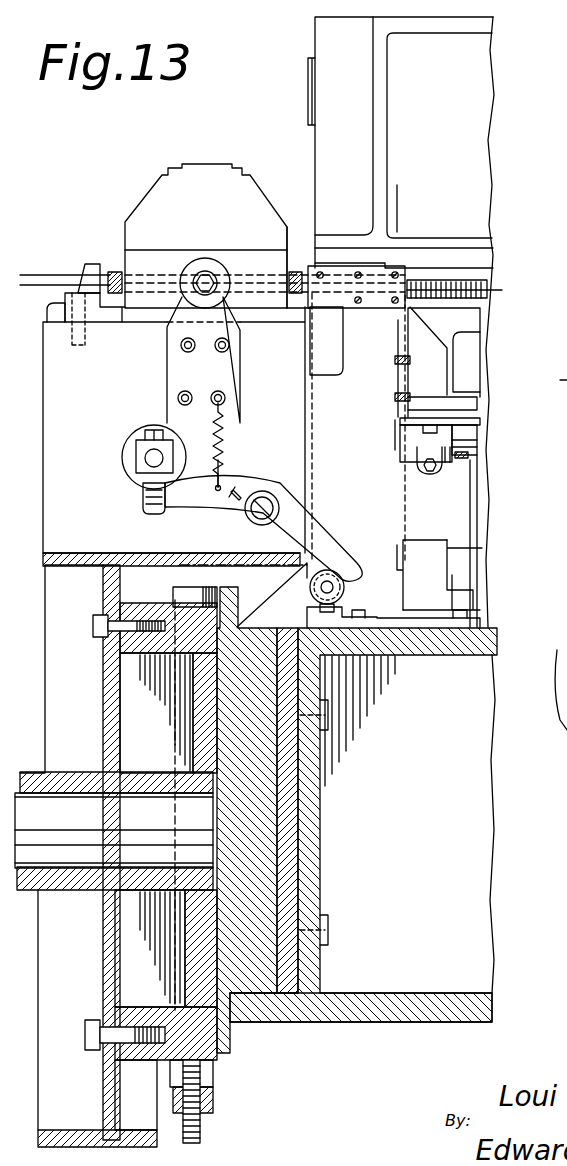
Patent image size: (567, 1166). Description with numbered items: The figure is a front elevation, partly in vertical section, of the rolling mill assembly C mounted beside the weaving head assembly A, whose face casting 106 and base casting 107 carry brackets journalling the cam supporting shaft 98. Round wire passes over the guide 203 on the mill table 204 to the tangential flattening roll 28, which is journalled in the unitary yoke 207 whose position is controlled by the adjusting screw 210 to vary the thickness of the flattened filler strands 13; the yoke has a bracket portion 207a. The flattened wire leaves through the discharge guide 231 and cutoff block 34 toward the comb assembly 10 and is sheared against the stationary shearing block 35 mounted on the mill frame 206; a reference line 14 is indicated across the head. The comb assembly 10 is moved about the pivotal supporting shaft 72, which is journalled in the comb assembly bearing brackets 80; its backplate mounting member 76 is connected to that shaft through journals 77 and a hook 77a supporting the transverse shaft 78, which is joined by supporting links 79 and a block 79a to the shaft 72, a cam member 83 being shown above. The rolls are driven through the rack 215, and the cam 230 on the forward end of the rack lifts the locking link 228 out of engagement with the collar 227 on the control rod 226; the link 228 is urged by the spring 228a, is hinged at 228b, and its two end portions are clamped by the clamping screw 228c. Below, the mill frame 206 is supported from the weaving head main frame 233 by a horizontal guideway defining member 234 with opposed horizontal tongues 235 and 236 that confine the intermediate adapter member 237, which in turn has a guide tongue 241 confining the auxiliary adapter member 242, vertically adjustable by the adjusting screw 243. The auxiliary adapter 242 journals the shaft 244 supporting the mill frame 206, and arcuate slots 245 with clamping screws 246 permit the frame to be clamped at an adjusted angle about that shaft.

The weaving head assembly A is at (503, 136).
The filler wire forming and injecting assembly C is at (137, 163).
The comb assembly 10 is at (465, 309).
The filler strands 13 is at (502, 290).
The reference plane 14 is at (388, 196).
The tangential flattening roll 28 is at (115, 271).
The knife 34 is at (408, 310).
The stationary shearing block 35 is at (405, 267).
The pivotal supporting shaft 72 is at (402, 556).
The backplate mounting member 76 is at (472, 404).
The journals 77 is at (447, 464).
The latch hook 77a is at (426, 475).
The transverse shaft 78 is at (403, 460).
The supporting links 79 is at (477, 513).
The bar block 79a is at (470, 456).
The comb assembly bearing brackets 80 is at (445, 552).
The cam member 83 is at (472, 337).
The supporting shaft 98 is at (307, 70).
The face casting 106 is at (487, 52).
The base casting 107 is at (472, 610).
The guide 203 is at (95, 266).
The mill table 204 is at (50, 308).
The mill frame 206 is at (40, 429).
The yoke 207 is at (152, 200).
The housing bracket 207a is at (108, 318).
The adjusting screw 210 is at (207, 258).
The rack 215 is at (152, 455).
The control rod 226 is at (313, 588).
The collar 227 is at (346, 590).
The link 228 is at (324, 518).
The spring 228a is at (222, 460).
The hinge 228b is at (256, 469).
The clamping screw 228c is at (228, 502).
The cam 230 is at (136, 468).
The discharge guide 231 is at (296, 267).
The weaving head main frame 233 is at (502, 832).
The horizontal guideway defining member 234 is at (306, 768).
The horizontal tongue 235 is at (300, 660).
The horizontal tongue 236 is at (290, 985).
The intermediate adapter member 237 is at (270, 825).
The guide tongue 241 is at (180, 600).
The auxiliary adapter member 242 is at (135, 725).
The adjusting screw 243 is at (205, 1130).
The shaft 244 is at (86, 824).
The arcuate slots 245 is at (103, 660).
The clamping screws 246 is at (96, 616).